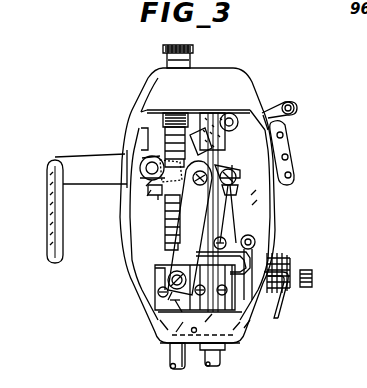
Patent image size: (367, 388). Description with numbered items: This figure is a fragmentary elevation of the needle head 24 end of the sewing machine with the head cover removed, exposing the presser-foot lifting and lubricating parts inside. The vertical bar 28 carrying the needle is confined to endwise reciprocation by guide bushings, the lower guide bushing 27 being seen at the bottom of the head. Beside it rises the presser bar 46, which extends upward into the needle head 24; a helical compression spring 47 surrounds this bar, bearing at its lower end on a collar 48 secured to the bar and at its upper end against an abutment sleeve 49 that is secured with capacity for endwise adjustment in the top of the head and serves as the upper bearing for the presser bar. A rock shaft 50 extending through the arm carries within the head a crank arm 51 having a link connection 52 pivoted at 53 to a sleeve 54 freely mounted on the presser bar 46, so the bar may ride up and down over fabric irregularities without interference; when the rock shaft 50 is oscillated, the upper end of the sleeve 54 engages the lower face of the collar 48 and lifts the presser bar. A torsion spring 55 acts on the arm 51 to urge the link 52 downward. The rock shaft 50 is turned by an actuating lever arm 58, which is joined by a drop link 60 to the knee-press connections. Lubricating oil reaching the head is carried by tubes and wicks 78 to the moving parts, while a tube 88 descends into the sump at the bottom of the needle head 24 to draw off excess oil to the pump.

The needle head 24 is at (268, 190).
The lower guide bushing 27 is at (232, 347).
The vertical bar 28 is at (220, 360).
The presser bar 46 is at (173, 358).
The helical compression spring 47 is at (167, 220).
The collar 48 is at (157, 268).
The abutment sleeve 49 is at (194, 50).
The rock shaft 50 is at (140, 172).
The crank arm 51 is at (163, 205).
The link connection 52 is at (213, 222).
The pivot 53 is at (168, 272).
The sleeve 54 is at (182, 312).
The torsion spring 55 is at (145, 153).
The actuating lever arm 58 is at (76, 158).
The drop link 60 is at (52, 215).
The tubes and wicks 78 is at (228, 150).
The tube 88 is at (254, 247).